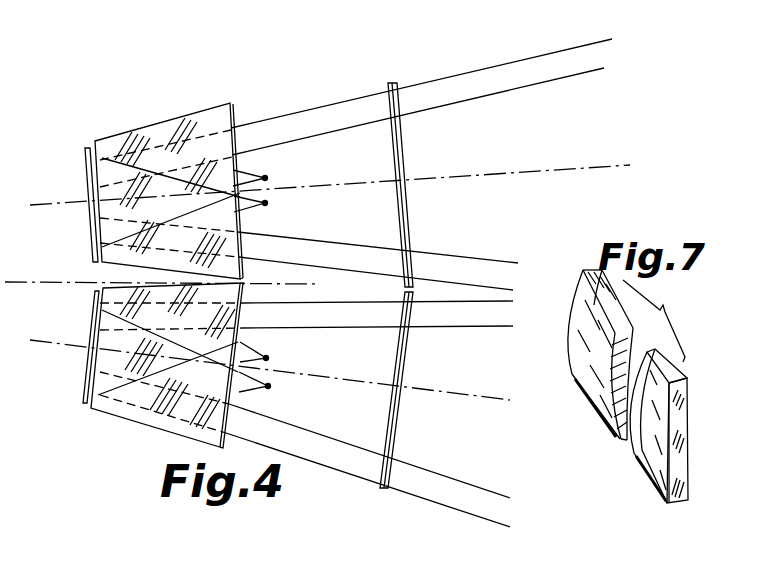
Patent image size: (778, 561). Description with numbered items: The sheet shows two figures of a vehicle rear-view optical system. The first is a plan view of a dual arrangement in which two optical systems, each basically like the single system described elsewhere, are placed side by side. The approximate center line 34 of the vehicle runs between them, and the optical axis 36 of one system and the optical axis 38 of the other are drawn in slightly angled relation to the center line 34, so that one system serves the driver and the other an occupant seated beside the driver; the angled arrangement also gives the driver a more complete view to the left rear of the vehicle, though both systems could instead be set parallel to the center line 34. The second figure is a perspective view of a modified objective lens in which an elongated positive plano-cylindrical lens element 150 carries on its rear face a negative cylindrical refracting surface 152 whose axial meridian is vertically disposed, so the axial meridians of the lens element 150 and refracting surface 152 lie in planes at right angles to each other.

In FIG. 4, the center line of the vehicle 34 is at (30, 281).
In FIG. 4, the optical axis 36 is at (49, 205).
In FIG. 4, the optical axis 38 is at (50, 343).
In FIG. 7, the positive plano-cylindrical lens element 150 is at (642, 474).
In FIG. 7, the negative cylindrical refracting surface 152 is at (678, 503).